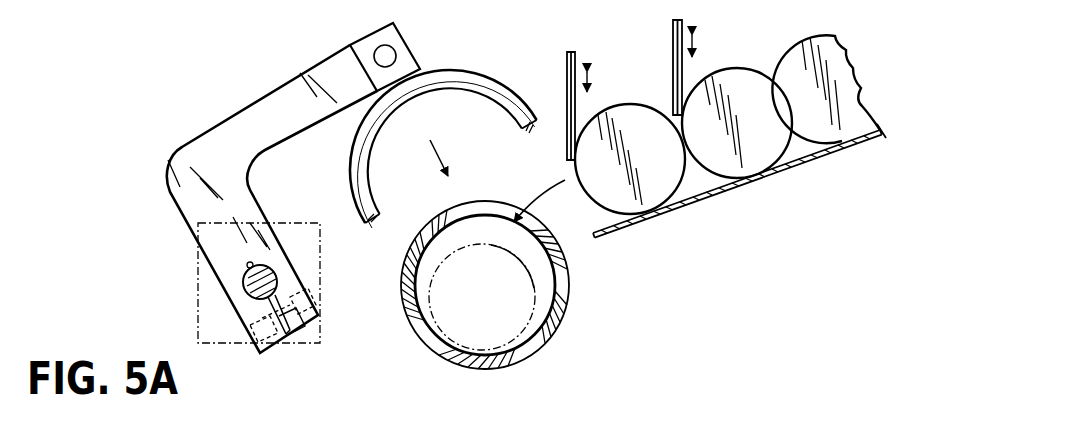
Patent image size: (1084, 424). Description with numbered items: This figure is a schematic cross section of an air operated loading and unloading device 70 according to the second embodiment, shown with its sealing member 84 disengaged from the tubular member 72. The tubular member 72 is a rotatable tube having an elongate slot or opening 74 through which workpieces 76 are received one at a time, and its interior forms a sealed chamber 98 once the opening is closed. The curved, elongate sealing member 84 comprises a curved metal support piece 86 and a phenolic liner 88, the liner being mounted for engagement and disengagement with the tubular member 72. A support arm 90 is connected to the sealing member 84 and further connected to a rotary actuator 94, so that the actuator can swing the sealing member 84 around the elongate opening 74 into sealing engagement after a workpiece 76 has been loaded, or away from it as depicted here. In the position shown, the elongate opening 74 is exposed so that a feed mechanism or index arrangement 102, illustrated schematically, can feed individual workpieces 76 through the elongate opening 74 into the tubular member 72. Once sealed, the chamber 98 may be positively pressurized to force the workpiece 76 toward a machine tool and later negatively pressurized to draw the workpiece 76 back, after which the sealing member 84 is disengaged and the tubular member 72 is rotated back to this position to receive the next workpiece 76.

The air operated loading and unloading device 70 is at (168, 102).
The support arm 90 is at (246, 106).
The sealing member 84 is at (456, 66).
The curved metal support piece 86 is at (504, 87).
The phenolic liner 88 is at (490, 97).
The rotary actuator 94 is at (238, 343).
The tubular member 72 is at (441, 359).
The elongate slot or opening 74 is at (486, 202).
The interior sealed chamber 98 is at (554, 287).
The workpiece 76 is at (794, 50).
The feed mechanism or index arrangement 102 is at (673, 43).